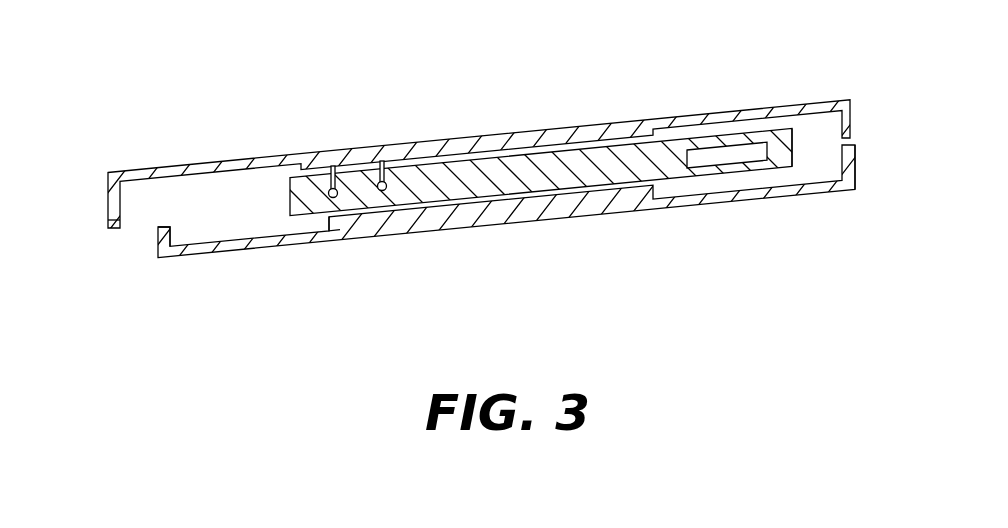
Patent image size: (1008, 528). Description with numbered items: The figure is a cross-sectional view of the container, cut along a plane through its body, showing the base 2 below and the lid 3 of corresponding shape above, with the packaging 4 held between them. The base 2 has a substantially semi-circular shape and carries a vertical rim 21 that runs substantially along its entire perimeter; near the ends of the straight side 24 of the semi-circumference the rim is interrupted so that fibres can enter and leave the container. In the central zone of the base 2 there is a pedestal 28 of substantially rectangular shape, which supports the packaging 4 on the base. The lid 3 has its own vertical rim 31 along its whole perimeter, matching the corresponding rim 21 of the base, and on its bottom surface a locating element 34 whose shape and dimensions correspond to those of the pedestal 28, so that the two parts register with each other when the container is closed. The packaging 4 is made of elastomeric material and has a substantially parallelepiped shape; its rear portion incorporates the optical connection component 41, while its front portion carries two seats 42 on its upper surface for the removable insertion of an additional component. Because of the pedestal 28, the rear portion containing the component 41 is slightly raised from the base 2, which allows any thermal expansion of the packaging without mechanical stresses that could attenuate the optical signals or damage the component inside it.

The base 2 is at (222, 250).
The lid 3 is at (160, 172).
The packaging 4 is at (797, 133).
The vertical rim 21 is at (858, 158).
The straight side 24 is at (158, 241).
The pedestal 28 is at (352, 220).
The vertical rim 31 is at (110, 210).
The locating element 34 is at (470, 158).
The optical connection component 41 is at (714, 146).
The seats 42 is at (382, 181).